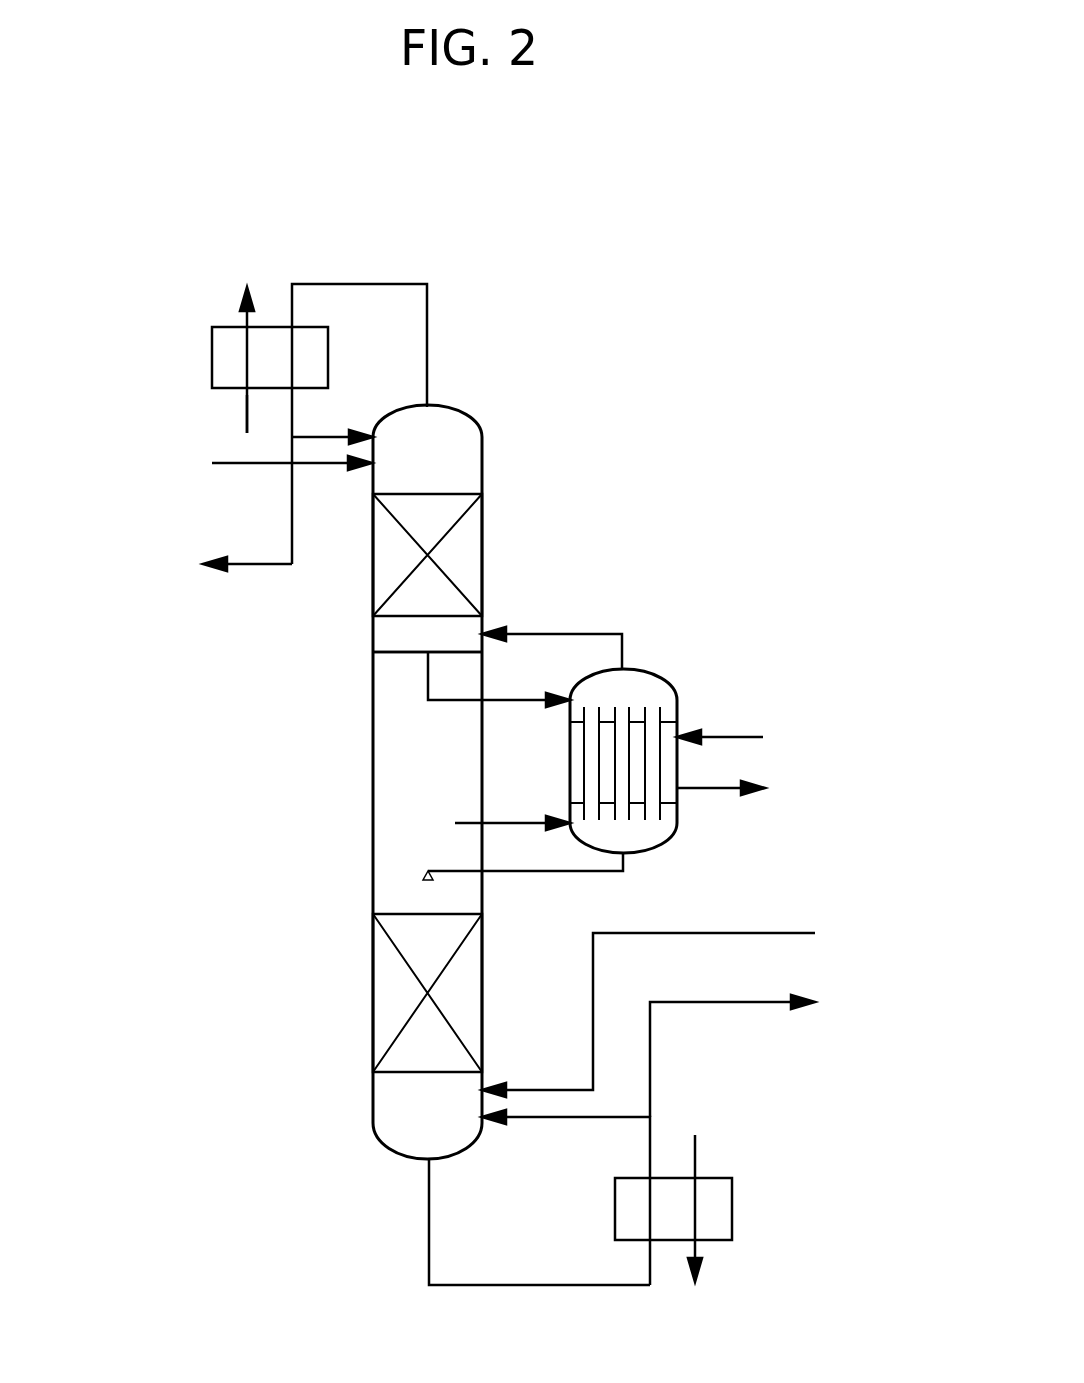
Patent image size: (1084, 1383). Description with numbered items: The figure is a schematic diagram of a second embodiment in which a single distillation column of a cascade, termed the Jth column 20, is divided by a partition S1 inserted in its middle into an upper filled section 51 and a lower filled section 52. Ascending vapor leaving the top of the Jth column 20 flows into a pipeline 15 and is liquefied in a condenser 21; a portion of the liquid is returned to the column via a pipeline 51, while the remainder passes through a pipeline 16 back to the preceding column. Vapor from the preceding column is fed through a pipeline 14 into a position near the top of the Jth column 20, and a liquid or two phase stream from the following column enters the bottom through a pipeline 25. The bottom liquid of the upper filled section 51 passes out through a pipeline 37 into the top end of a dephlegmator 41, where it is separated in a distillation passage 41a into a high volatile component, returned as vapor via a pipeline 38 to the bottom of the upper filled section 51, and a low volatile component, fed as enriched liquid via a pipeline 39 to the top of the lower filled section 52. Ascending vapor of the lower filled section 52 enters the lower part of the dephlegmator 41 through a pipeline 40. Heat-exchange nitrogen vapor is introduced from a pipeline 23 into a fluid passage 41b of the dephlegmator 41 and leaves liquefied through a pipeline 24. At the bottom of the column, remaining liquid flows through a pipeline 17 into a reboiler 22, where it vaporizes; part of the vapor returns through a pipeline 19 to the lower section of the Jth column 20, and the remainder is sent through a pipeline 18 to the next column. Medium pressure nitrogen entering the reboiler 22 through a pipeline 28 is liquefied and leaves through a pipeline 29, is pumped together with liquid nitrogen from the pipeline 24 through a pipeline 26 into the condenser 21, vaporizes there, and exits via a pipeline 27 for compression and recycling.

The pipeline 14 is at (247, 467).
The pipeline 15 is at (427, 312).
The pipeline 16 is at (250, 567).
The pipeline 17 is at (488, 1283).
The pipeline 18 is at (700, 1003).
The pipeline 19 is at (573, 1117).
The Jth column 20 is at (453, 418).
The condenser 21 is at (212, 345).
The reboiler 22 is at (732, 1205).
The pipeline 23 is at (733, 733).
The pipeline 24 is at (747, 783).
The pipeline 25 is at (772, 930).
The pipeline 26 is at (246, 408).
The pipeline 27 is at (246, 290).
The pipeline 28 is at (695, 1157).
The pipeline 29 is at (700, 1272).
The pipeline 37 is at (498, 697).
The pipeline 38 is at (596, 634).
The pipeline 39 is at (553, 873).
The pipeline 40 is at (508, 818).
The dephlegmator 41 is at (670, 742).
The distillation passage 41a is at (620, 717).
The fluid passage 41b is at (637, 788).
The upper filled section 51 is at (318, 433).
The lower filled section 52 is at (388, 992).
The partition S1 is at (402, 657).